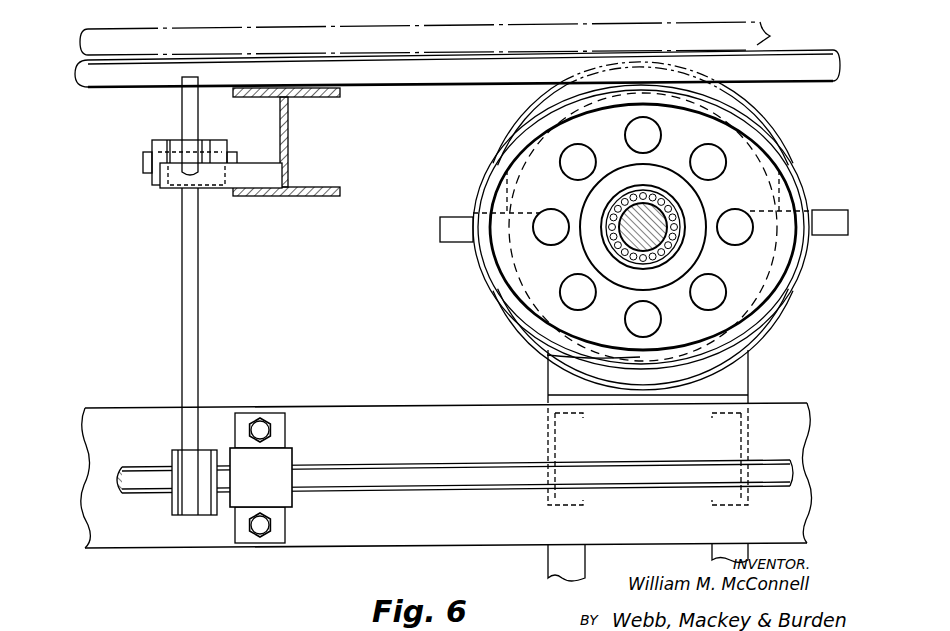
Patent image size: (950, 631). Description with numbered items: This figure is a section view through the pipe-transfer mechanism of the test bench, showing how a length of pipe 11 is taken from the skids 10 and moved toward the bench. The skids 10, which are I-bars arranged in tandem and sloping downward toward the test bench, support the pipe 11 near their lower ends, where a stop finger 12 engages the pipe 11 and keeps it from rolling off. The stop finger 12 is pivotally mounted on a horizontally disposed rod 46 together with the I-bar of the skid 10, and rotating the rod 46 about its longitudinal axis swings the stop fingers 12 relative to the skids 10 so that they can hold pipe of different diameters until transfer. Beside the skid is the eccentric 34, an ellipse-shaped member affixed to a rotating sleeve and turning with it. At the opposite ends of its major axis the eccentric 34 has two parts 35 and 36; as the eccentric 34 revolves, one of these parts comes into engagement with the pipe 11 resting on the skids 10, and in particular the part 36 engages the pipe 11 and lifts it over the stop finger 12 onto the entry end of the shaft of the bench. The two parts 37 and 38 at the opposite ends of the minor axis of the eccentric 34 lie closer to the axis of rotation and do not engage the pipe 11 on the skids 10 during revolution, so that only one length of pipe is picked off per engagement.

The skid 10 is at (289, 135).
The pipe 11 is at (497, 4).
The stop finger 12 is at (182, 100).
The eccentric 34 is at (757, 126).
The part of eccentric at end of major axis 35 is at (803, 198).
The part of eccentric at end of major axis 36 is at (562, 90).
The part of eccentric at end of minor axis 37 is at (716, 98).
The part of eccentric at end of minor axis 38 is at (550, 354).
The rod 46 is at (462, 492).